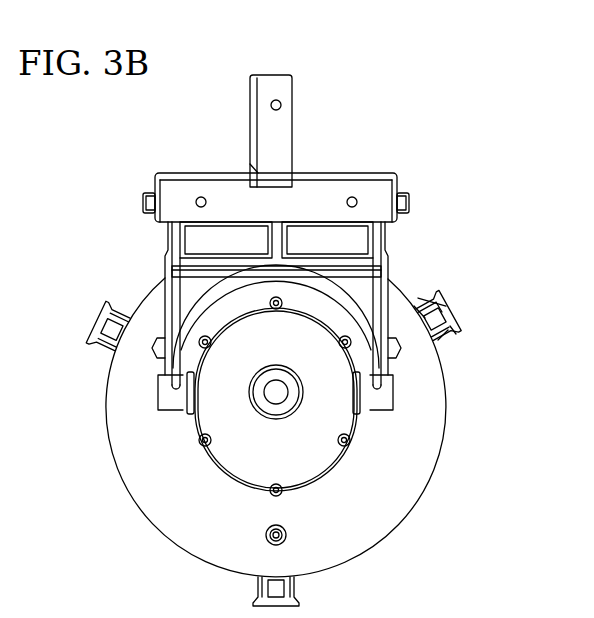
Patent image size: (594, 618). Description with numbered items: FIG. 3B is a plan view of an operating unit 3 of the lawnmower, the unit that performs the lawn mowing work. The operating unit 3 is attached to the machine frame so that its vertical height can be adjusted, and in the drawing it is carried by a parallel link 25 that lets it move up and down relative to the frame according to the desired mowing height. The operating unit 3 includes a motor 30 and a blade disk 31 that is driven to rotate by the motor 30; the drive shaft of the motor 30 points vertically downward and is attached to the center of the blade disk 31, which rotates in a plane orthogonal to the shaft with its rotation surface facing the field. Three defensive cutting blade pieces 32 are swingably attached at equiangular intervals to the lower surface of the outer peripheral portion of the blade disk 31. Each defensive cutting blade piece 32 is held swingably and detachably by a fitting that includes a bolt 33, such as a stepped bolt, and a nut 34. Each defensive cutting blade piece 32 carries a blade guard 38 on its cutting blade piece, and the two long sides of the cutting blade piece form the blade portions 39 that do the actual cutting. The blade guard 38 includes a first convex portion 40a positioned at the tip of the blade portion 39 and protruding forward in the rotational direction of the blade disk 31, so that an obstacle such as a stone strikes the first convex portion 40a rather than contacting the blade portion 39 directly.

The operating unit 3 is at (398, 180).
The parallel link 25 is at (178, 292).
The motor 30 is at (308, 449).
The blade disk 31 is at (392, 508).
The defensive cutting blade piece 32 is at (295, 597).
The bolt 33 is at (265, 535).
The nut 34 is at (286, 539).
The blade guard 38 is at (447, 304).
The blade portion 39 is at (421, 308).
The first convex portion 40a is at (437, 300).